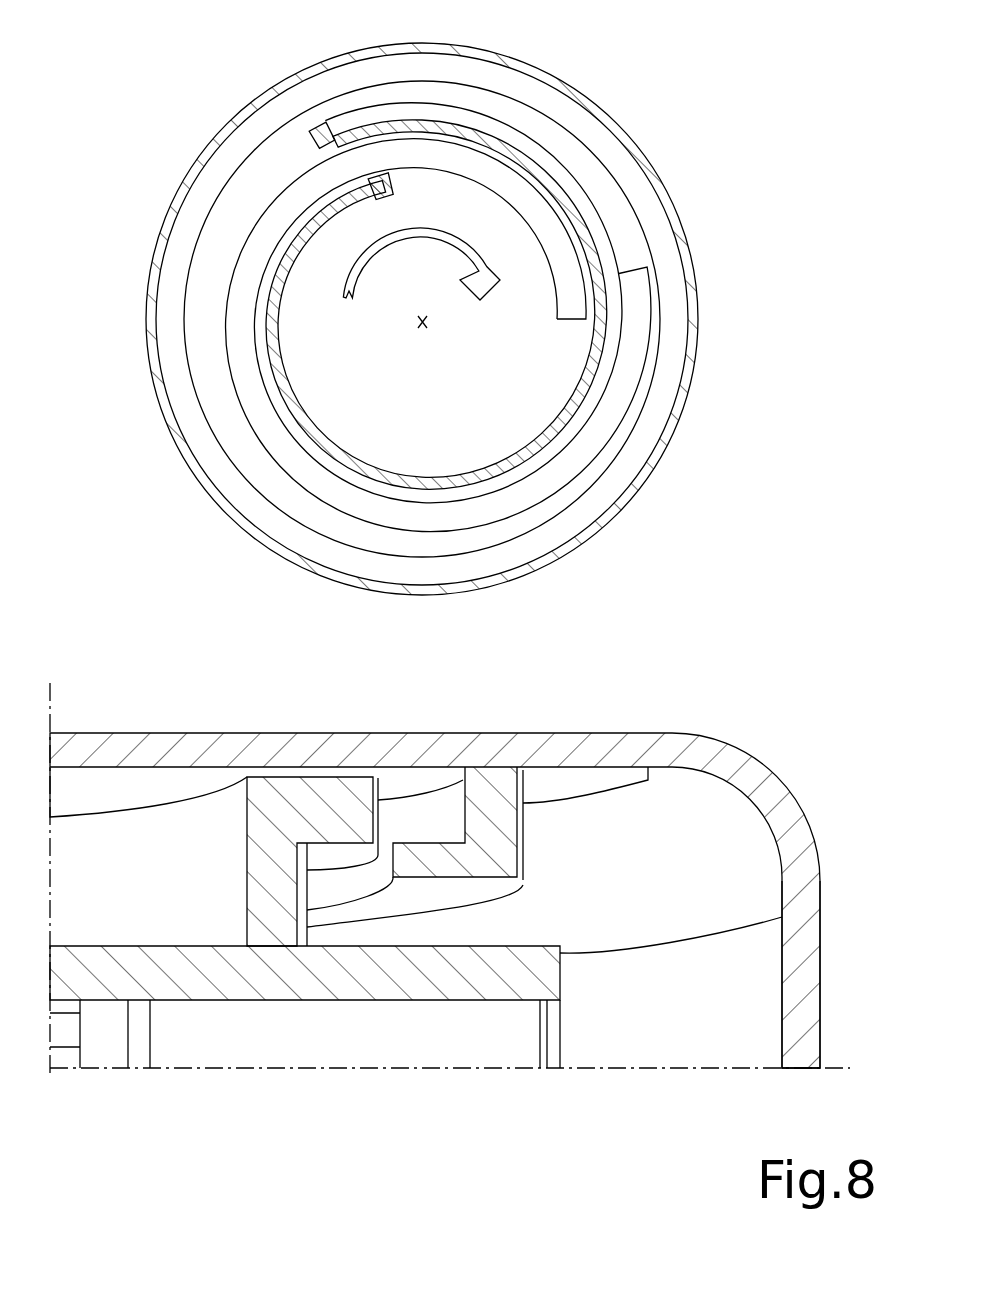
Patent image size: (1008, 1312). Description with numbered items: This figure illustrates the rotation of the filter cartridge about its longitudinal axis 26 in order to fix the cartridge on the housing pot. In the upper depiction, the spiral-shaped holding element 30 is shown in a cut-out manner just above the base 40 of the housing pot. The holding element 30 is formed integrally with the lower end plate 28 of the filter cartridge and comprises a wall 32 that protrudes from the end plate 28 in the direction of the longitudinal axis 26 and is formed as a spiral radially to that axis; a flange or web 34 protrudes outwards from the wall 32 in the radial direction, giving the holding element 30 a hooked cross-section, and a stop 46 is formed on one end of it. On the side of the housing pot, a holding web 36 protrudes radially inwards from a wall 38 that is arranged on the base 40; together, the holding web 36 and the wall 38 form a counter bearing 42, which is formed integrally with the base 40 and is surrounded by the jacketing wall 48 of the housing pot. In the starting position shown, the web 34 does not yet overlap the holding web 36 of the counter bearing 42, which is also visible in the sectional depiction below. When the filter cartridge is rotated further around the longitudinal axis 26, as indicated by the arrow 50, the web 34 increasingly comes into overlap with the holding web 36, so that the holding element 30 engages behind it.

The longitudinal axis 26 is at (419, 333).
The end plate 28 is at (178, 992).
The holding element 30 is at (333, 113).
The wall 32 is at (410, 127).
The web 34 is at (492, 120).
The holding web 36 is at (638, 335).
The wall 38 is at (497, 822).
The base 40 is at (323, 380).
The counter bearing 42 is at (612, 445).
The stop 46 is at (313, 137).
The jacketing wall 48 is at (800, 1020).
The arrow 50 is at (358, 300).